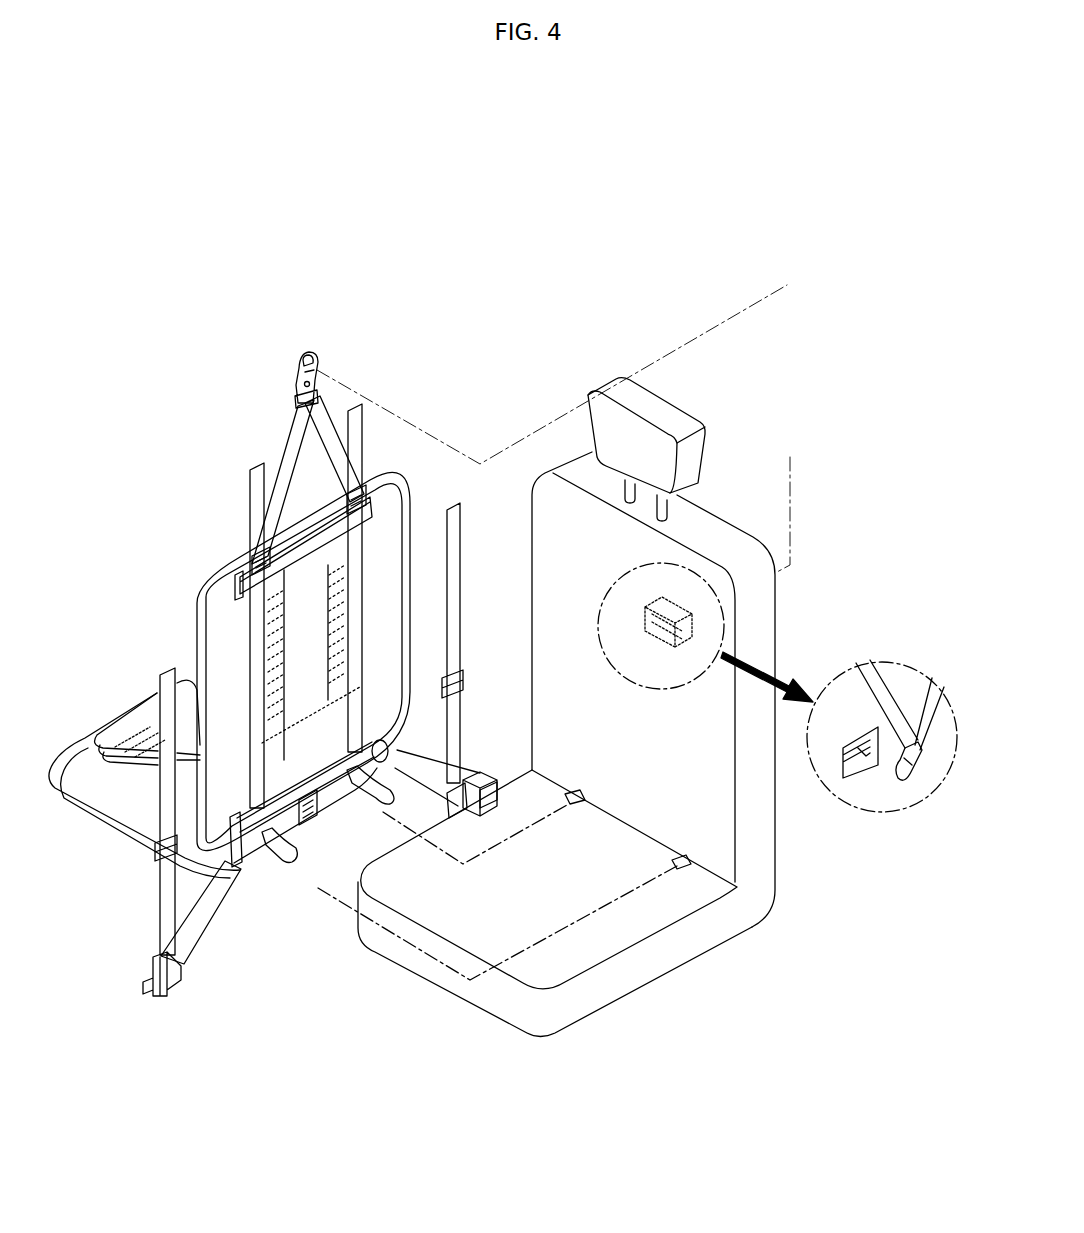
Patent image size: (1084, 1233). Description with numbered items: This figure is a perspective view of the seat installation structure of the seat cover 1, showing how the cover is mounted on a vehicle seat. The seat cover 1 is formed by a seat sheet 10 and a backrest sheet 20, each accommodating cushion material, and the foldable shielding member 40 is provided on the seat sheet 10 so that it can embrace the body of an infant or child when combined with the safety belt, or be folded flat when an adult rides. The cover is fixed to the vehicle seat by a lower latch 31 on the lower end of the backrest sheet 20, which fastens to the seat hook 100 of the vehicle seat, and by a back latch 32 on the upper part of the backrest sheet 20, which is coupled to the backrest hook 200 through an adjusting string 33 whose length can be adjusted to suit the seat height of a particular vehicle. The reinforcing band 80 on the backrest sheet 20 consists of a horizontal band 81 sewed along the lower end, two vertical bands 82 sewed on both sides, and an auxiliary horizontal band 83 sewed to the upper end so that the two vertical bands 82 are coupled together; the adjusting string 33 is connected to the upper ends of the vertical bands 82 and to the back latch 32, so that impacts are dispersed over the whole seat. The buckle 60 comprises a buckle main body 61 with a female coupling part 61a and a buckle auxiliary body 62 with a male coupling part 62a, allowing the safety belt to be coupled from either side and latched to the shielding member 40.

The seat cover 1 is at (424, 403).
The seat sheet 10 is at (92, 805).
The backrest sheet 20 is at (412, 500).
The lower latch 31 is at (291, 860).
The back latch 32 is at (310, 352).
The adjusting string 33 is at (333, 420).
The shielding member 40 is at (143, 715).
The buckle 60 is at (505, 695).
The buckle main body 61 is at (477, 773).
The female coupling part 61a is at (497, 787).
The buckle auxiliary body 62 is at (177, 989).
The male coupling part 62a is at (150, 986).
The reinforcing band 80 is at (127, 556).
The horizontal band 81 is at (258, 668).
The vertical band 82 is at (268, 627).
The auxiliary horizontal band 83 is at (265, 548).
The seat hook 100 is at (572, 805).
The backrest hook 200 is at (854, 771).